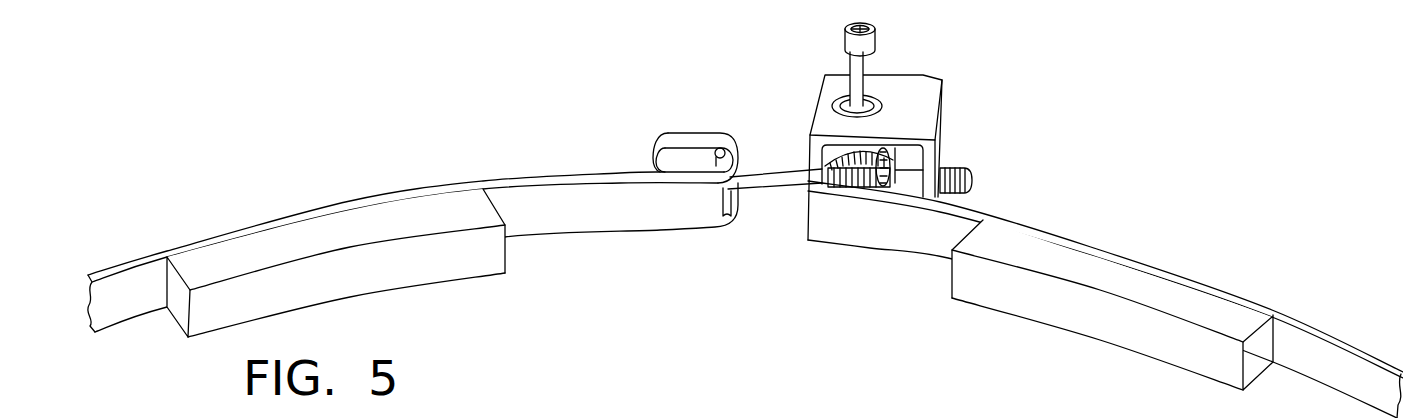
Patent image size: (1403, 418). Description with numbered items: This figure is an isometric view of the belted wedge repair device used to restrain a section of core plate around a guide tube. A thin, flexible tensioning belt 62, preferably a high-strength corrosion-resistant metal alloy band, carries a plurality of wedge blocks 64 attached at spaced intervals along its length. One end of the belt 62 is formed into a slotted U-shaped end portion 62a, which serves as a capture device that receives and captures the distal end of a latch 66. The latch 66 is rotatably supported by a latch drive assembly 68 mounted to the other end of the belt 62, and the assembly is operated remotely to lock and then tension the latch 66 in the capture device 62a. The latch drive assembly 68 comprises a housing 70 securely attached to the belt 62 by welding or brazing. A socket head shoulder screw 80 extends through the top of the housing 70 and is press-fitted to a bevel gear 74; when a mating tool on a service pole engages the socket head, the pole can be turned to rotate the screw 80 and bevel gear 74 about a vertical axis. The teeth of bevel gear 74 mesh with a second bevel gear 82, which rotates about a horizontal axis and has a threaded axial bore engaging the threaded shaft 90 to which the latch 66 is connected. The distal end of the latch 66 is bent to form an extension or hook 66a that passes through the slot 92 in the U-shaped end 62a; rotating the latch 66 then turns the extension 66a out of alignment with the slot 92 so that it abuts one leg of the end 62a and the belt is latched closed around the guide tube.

The tensioning belt 62 is at (547, 173).
The slotted U-shaped end portion 62a is at (698, 132).
The wedge blocks 64 is at (393, 272).
The latch 66 is at (790, 170).
The extension or hook 66a is at (720, 148).
The latch drive assembly 68 is at (911, 131).
The housing 70 is at (942, 100).
The bevel gear 74 is at (877, 150).
The socket head shoulder screw 80 is at (842, 42).
The bevel gear 82 is at (886, 190).
The shaft 90 is at (963, 166).
The slot 92 is at (746, 202).